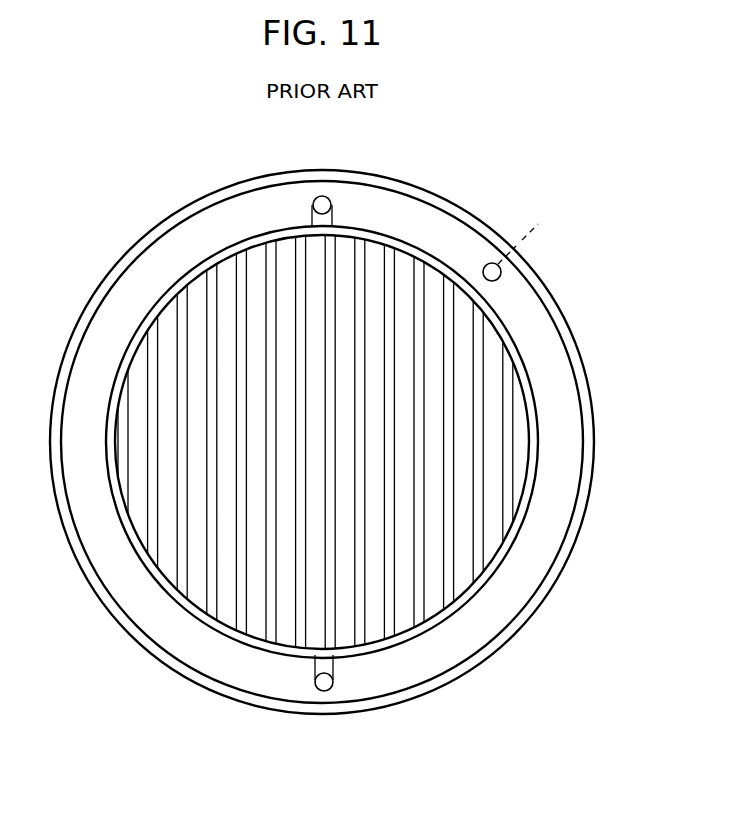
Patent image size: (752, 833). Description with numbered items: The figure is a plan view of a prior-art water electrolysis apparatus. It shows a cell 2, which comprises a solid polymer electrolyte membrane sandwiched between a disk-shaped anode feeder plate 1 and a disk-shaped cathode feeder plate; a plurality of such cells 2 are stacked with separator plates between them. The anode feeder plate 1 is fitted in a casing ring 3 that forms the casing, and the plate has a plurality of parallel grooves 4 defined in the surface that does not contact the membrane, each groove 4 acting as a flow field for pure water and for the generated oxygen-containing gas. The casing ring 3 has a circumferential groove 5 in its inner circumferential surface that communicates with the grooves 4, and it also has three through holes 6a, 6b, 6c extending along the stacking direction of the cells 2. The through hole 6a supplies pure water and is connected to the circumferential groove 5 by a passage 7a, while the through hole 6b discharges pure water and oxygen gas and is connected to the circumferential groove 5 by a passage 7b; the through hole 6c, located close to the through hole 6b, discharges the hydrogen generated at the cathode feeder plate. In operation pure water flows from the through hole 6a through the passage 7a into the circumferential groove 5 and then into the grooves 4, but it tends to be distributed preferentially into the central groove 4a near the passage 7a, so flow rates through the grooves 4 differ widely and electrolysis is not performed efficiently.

The anode feeder plate 1 is at (354, 449).
The cell 2 is at (354, 449).
The casing ring 3 is at (485, 231).
The grooves 4 is at (330, 498).
The central groove 4a is at (330, 631).
The circumferential groove 5 is at (537, 384).
The through hole 6a is at (323, 688).
The through hole 6b is at (322, 202).
The through hole 6c is at (493, 279).
The passage 7a is at (315, 668).
The passage 7b is at (312, 218).